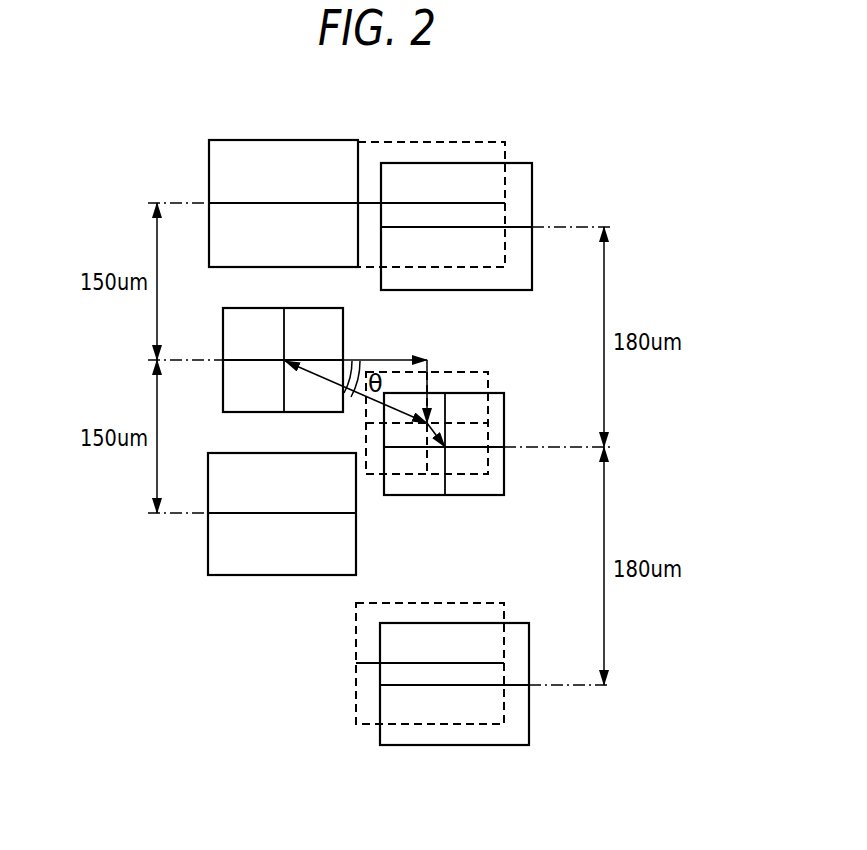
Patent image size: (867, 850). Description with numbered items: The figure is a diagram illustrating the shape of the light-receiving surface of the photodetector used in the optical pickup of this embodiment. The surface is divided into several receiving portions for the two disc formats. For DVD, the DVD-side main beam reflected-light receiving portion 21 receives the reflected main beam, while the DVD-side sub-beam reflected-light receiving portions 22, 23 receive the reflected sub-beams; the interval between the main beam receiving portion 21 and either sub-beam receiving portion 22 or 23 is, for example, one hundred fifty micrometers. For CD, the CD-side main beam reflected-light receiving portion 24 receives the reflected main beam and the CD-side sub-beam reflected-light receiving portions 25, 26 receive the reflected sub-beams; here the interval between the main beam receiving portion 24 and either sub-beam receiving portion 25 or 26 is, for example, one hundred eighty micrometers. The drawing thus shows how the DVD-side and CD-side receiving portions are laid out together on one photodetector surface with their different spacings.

The DVD-side main beam reflected-light receiving portion 21 is at (343, 317).
The DVD-side sub-beam reflected-light receiving portion 22 is at (317, 140).
The DVD-side sub-beam reflected-light receiving portion 23 is at (240, 575).
The CD-side main beam reflected-light receiving portion 24 is at (468, 495).
The CD-side sub-beam reflected-light receiving portion 25 is at (532, 178).
The CD-side sub-beam reflected-light receiving portion 26 is at (529, 735).